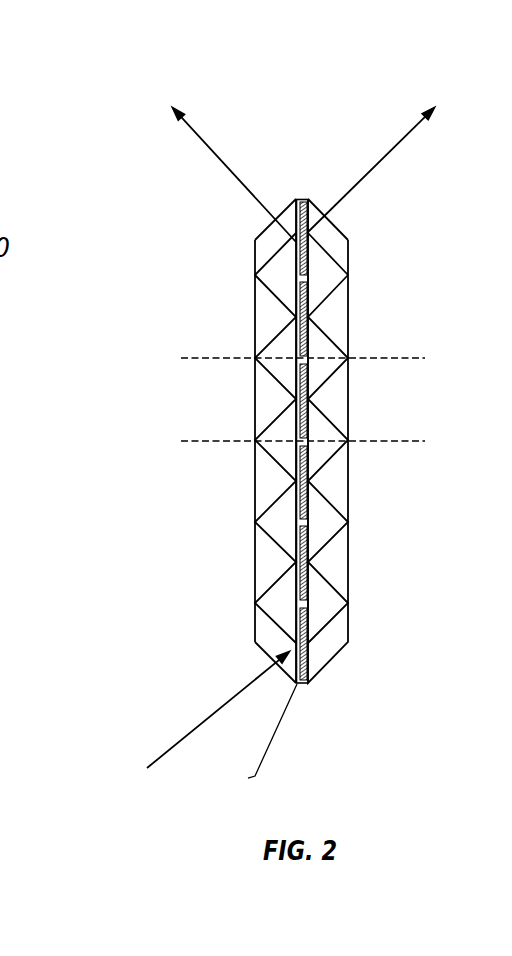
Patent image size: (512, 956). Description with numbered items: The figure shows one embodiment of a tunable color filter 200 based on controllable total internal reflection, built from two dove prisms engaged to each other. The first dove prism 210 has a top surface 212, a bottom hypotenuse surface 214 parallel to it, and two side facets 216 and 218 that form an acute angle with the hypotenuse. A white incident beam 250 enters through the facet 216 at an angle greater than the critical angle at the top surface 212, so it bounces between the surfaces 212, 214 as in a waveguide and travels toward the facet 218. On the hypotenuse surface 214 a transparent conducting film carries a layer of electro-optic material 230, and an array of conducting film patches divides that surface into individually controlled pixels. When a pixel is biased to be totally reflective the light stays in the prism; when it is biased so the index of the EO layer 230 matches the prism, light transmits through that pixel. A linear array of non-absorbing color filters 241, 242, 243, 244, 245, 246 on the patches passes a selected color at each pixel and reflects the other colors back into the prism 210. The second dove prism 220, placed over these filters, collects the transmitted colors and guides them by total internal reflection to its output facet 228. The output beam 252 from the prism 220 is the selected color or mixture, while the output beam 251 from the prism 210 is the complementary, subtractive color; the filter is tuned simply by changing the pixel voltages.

The tunable color filter 200 is at (219, 50).
The first dove prism 210 is at (226, 479).
The top surface 212 is at (227, 340).
The bottom hypotenuse surface 214 is at (226, 541).
The side facet 216 is at (253, 701).
The side facet 218 is at (248, 218).
The second dove prism 220 is at (338, 560).
The output facet 228 is at (355, 219).
The electro-optic material layer 230 is at (247, 494).
The non-absorbing color filter 241 is at (354, 499).
The non-absorbing color filter 242 is at (307, 582).
The non-absorbing color filter 243 is at (307, 493).
The non-absorbing color filter 244 is at (307, 395).
The non-absorbing color filter 245 is at (307, 317).
The non-absorbing color filter 246 is at (354, 238).
The incident beam 250 is at (181, 727).
The output beam 251 is at (166, 157).
The output beam 252 is at (389, 152).